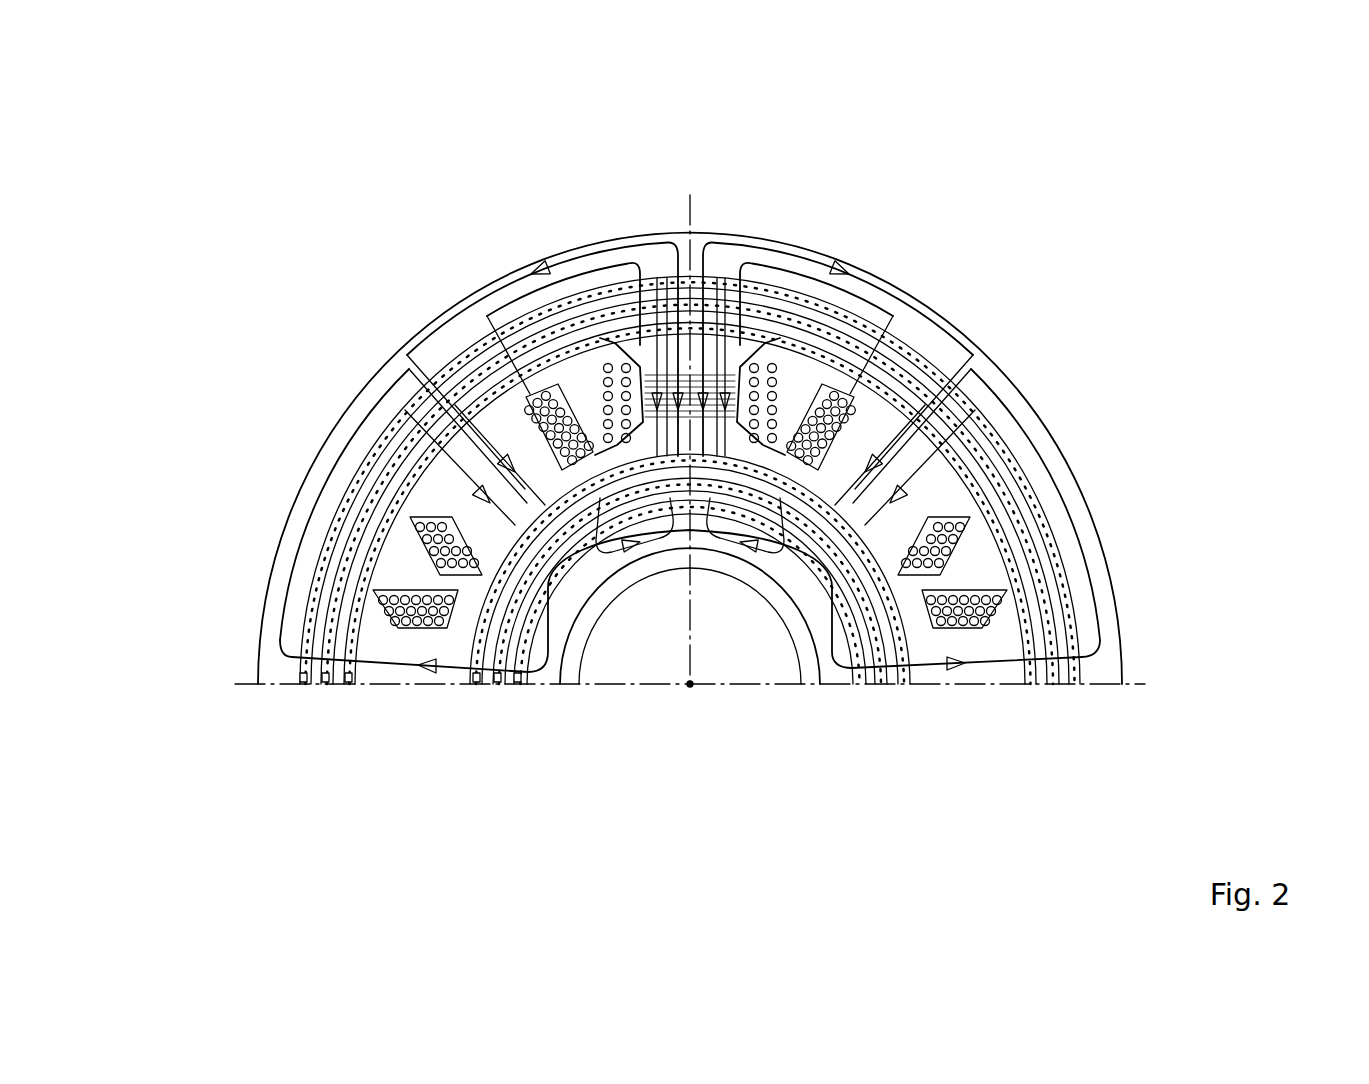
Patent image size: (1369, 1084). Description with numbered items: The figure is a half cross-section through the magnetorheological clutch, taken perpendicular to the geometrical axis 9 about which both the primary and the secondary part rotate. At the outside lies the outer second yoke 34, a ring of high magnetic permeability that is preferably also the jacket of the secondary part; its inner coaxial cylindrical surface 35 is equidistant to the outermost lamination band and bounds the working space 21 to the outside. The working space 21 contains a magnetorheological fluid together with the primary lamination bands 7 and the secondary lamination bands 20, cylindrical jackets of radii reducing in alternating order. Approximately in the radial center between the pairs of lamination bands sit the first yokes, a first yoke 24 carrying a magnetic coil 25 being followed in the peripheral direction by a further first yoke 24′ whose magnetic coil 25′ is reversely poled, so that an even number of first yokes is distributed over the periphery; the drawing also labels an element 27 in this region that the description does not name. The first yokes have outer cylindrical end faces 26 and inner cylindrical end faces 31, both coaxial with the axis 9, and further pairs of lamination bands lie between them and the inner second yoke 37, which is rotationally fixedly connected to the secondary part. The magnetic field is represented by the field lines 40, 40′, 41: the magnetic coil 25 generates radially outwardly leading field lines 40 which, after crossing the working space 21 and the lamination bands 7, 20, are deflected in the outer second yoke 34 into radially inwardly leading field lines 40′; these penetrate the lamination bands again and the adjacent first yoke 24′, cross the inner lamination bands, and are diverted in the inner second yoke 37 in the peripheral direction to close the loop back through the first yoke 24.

The outer second yoke 34 is at (400, 382).
The field line 41 is at (577, 250).
The field line 40 is at (676, 259).
The field line 40′ is at (826, 388).
The first yoke 24 is at (673, 362).
The further first yoke 24′ is at (917, 459).
The magnetic coil 25 is at (758, 374).
The magnetic coil 25′ is at (988, 518).
The outer cylindrical end face 26 is at (718, 355).
The coil 27 is at (423, 563).
The primary lamination band 7 is at (333, 562).
The secondary lamination band 20 is at (347, 595).
The working space 21 is at (517, 680).
The inner coaxial cylindrical surface 35 is at (503, 595).
The inner cylindrical end face 31 is at (577, 622).
The axis 9 is at (690, 684).
The inner second yoke 37 is at (790, 582).